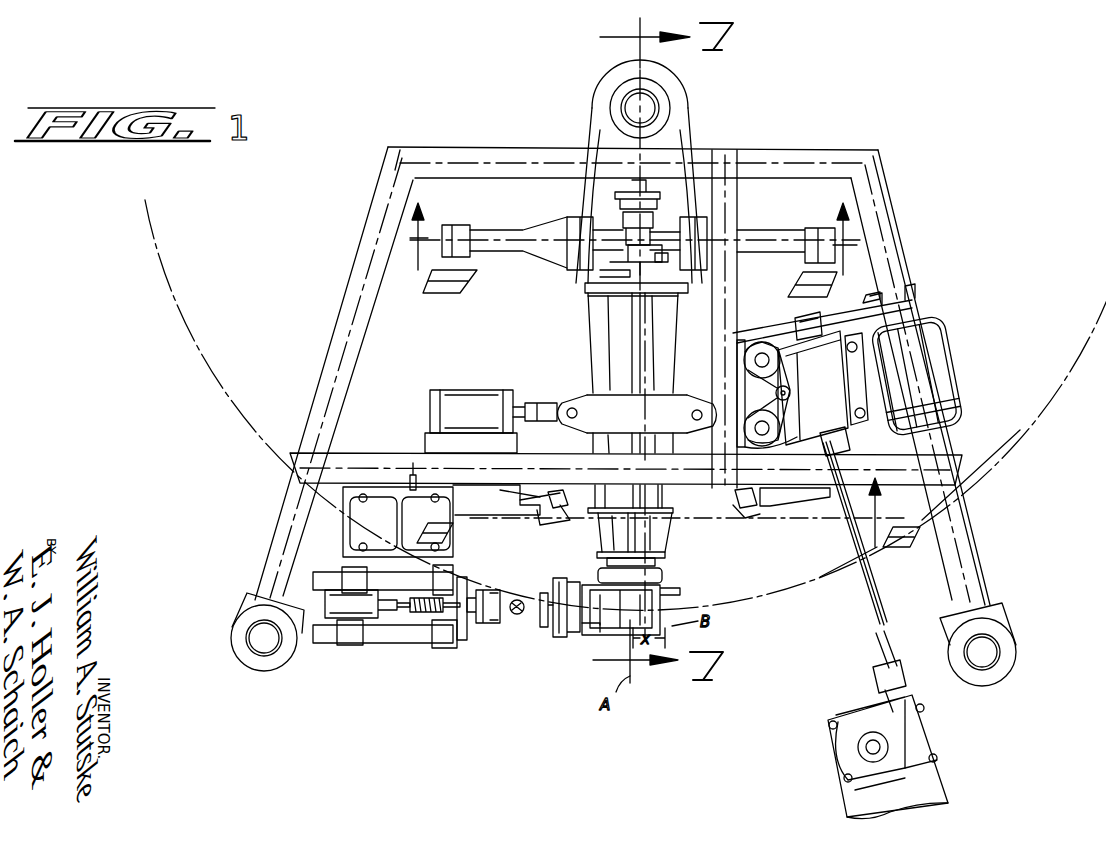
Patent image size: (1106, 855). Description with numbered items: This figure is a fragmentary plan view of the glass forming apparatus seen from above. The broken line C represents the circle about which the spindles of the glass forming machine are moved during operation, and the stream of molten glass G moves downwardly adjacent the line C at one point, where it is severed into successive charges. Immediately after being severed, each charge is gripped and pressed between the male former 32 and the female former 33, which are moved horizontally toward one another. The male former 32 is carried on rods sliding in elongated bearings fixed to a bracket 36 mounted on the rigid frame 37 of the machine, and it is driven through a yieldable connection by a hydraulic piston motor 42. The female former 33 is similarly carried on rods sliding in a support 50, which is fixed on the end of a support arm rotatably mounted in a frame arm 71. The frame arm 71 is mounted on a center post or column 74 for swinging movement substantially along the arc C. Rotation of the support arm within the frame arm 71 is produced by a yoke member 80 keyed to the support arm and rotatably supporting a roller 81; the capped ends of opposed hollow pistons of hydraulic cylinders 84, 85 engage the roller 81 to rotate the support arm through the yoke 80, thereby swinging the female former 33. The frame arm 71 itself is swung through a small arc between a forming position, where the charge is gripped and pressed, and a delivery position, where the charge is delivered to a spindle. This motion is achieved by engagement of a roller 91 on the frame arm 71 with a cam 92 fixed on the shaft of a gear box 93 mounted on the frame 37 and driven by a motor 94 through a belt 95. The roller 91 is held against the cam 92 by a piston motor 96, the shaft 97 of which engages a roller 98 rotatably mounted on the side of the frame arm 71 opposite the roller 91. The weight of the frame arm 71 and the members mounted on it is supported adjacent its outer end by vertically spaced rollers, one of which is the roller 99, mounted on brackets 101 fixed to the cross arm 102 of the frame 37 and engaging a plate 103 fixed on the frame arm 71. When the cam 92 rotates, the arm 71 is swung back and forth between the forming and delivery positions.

The rigid frame 37 is at (326, 303).
The cross arm 102 is at (392, 428).
The center post or column 74 is at (648, 106).
The frame arm 71 is at (616, 330).
The roller 98 is at (570, 400).
The roller 91 is at (703, 405).
The piston motor 96 is at (490, 378).
The shaft 97 is at (542, 404).
The hydraulic cylinder 84 is at (495, 237).
The hydraulic cylinder 85 is at (800, 218).
The yoke member 80 is at (672, 226).
The roller 81 is at (668, 263).
The gear box 93 is at (824, 409).
The cam 92 is at (766, 326).
The belt 95 is at (872, 300).
The motor 94 is at (952, 366).
The support 50 is at (668, 578).
The plate 103 is at (695, 498).
The roller 99 is at (552, 510).
The bracket 101 is at (528, 505).
The bracket 36 is at (345, 525).
The hydraulic piston motor 42 is at (340, 605).
The male former 32 is at (490, 625).
The stream of molten glass G is at (516, 616).
The female former 33 is at (548, 608).
The circle (broken line) C is at (1050, 398).